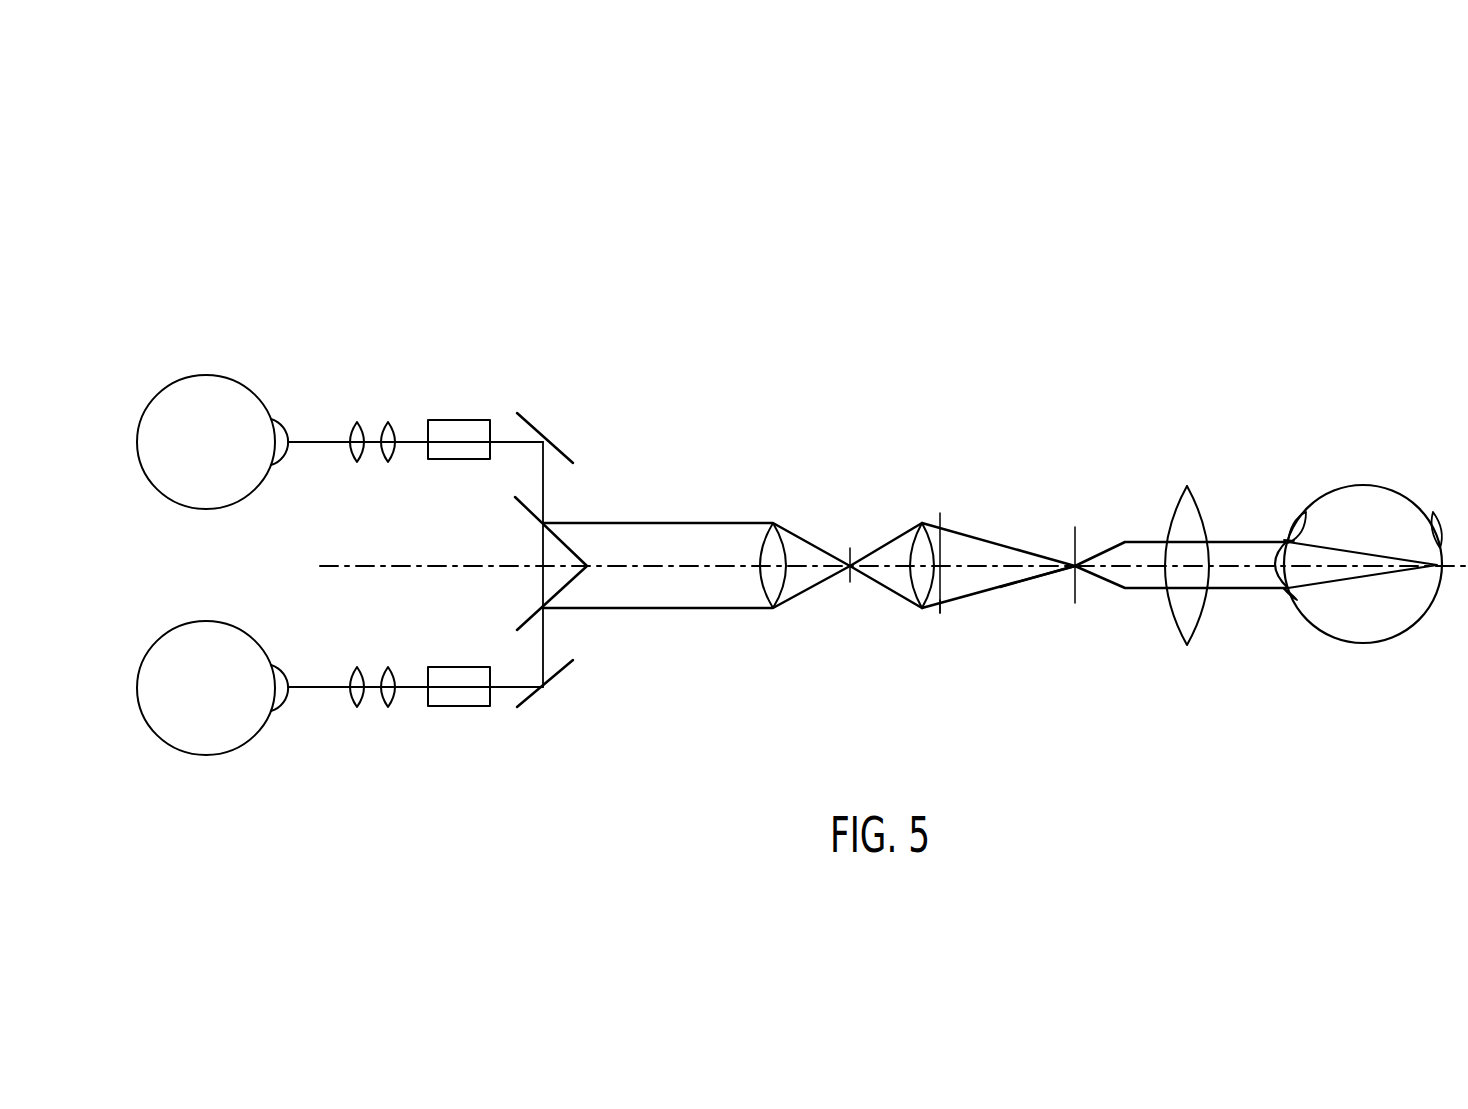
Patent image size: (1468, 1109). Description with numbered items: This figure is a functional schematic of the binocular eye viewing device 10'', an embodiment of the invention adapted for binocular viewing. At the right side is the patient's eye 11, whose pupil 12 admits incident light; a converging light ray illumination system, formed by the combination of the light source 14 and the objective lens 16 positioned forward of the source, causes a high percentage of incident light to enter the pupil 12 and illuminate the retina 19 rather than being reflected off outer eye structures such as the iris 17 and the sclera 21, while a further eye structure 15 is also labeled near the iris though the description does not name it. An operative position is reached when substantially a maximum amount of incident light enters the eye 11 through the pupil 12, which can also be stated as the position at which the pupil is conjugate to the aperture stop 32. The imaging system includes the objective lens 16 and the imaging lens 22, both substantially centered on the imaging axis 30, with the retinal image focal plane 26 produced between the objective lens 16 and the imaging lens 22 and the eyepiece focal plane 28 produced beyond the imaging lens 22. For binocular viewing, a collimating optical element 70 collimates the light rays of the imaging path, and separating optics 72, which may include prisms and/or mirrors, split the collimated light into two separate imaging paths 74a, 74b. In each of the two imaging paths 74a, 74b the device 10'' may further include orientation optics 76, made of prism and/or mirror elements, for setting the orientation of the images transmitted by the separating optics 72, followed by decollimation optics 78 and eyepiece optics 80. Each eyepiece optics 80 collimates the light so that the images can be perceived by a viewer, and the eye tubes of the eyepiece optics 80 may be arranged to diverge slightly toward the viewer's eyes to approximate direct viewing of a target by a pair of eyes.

The binocular eye viewing device 10'' is at (894, 422).
The eye 11 is at (1359, 536).
The pupil 12 is at (1305, 514).
The light source 14 is at (950, 545).
The pupil upper edge 15 is at (1289, 540).
The objective lens 16 is at (1168, 522).
The iris 17 is at (1285, 590).
The retina 19 is at (1436, 526).
The sclera 21 is at (1315, 628).
The imaging lens 22 is at (912, 550).
The retinal image focal plane 26 is at (1071, 547).
The eyepiece focal plane 28 is at (843, 553).
The imaging axis 30 is at (1036, 569).
The aperture stop 32 is at (940, 608).
The collimating optical element 70 is at (760, 552).
The separating optics 72 is at (564, 437).
The imaging path 74a is at (434, 386).
The imaging path 74b is at (392, 757).
The orientation optics 76 is at (450, 420).
The decollimation optics 78 is at (386, 432).
The eyepiece optics 80 is at (352, 434).